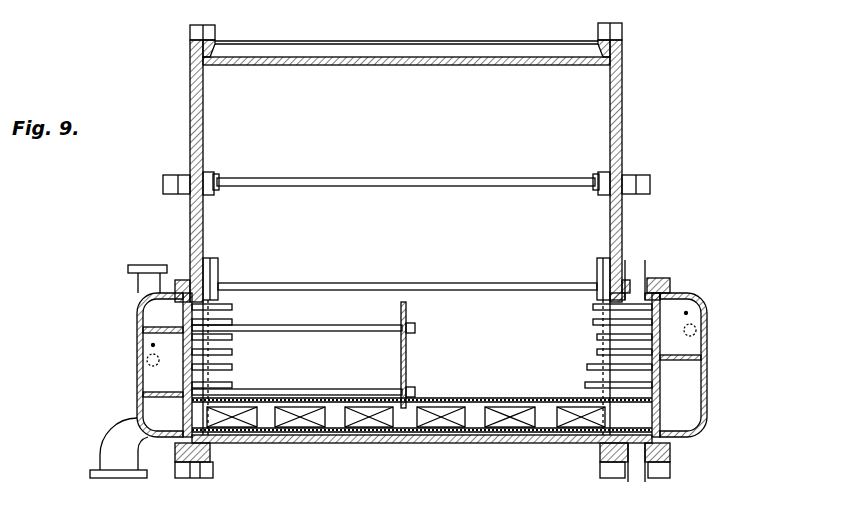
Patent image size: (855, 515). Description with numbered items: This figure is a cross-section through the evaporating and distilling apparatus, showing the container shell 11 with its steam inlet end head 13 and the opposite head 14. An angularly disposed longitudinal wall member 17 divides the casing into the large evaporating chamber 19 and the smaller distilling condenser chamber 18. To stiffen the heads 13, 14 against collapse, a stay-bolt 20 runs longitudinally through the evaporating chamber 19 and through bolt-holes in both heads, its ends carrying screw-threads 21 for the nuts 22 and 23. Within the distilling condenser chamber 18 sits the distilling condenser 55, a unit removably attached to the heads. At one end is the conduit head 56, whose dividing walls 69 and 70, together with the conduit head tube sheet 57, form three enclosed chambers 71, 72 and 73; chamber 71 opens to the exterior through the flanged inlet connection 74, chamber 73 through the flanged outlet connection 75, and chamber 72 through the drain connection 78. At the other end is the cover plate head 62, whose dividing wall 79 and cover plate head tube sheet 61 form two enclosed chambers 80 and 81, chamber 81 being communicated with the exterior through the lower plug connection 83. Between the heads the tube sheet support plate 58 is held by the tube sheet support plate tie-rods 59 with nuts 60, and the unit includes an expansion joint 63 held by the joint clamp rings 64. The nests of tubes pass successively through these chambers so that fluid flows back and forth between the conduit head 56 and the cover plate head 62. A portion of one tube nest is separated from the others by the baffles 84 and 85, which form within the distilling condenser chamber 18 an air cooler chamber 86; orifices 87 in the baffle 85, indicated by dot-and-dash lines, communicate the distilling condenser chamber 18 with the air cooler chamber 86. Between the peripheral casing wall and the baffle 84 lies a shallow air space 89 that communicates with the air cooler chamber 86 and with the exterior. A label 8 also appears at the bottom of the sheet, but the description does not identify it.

The container shell 11 is at (348, 29).
The evaporating chamber 19 is at (462, 75).
The head 14 is at (190, 90).
The steam inlet end head 13 is at (622, 110).
The stay-bolt 20 is at (394, 178).
The screw-threads 21 is at (220, 178).
The nut 22 is at (212, 196).
The nut 23 is at (166, 184).
The longitudinal wall member 17 is at (220, 273).
The conduit head tube sheet 57 is at (185, 285).
The chamber 73 is at (155, 312).
The dividing wall 70 is at (150, 330).
The dividing wall 69 is at (146, 395).
The conduit head 56 is at (183, 340).
The chamber 72 is at (153, 346).
The drain connection 78 is at (148, 364).
The flanged outlet connection 75 is at (138, 283).
The flanged inlet connection 74 is at (112, 457).
The chamber 71 is at (175, 450).
The cover plate head 62 is at (700, 334).
The chamber 81 is at (688, 313).
The lower plug connection 83 is at (707, 358).
The cover plate head tube sheet 61 is at (661, 372).
The dividing wall 79 is at (708, 380).
The chamber 80 is at (705, 432).
The distilling condenser 55 is at (688, 444).
The joint clamp rings 64 is at (643, 292).
The expansion joint 63 is at (603, 322).
The tube sheet support plate tie-rods 59 is at (336, 332).
The tube sheet support plate 58 is at (406, 368).
The nuts 60 is at (403, 324).
The baffle 85 is at (462, 398).
The baffle 84 is at (426, 433).
The orifices 87 is at (292, 421).
The air cooler chamber 86 is at (332, 428).
The air space 89 is at (510, 440).
The distilling condenser chamber 18 is at (352, 506).
The apparatus 8 is at (399, 504).